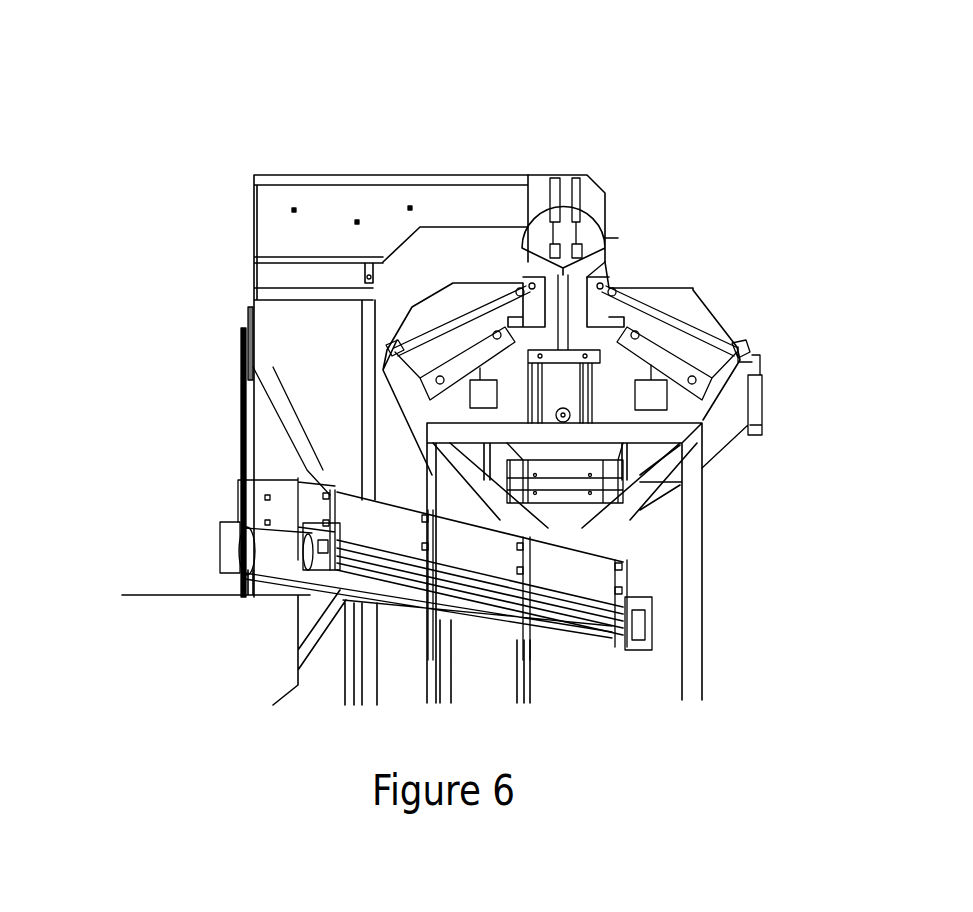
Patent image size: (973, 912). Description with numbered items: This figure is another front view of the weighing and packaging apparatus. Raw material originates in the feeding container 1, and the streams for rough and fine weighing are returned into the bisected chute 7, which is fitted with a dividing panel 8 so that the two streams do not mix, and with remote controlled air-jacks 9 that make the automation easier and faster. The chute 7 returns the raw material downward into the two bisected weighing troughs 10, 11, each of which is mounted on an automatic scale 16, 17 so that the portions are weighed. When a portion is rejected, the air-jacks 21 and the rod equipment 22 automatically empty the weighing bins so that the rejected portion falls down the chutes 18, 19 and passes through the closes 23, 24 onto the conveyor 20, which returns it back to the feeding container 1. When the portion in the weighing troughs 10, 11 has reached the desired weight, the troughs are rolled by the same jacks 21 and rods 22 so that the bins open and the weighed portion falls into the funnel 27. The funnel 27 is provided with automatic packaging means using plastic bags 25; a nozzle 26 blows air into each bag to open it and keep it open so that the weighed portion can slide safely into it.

The feeding container 1 is at (215, 645).
The chute 7 is at (590, 190).
The dividing panel 8 is at (576, 238).
The remote controlled air-jacks 9 is at (558, 178).
The weighing trough 10 is at (693, 290).
The weighing trough 11 is at (434, 320).
The automatic scale 16 is at (752, 355).
The automatic scale 17 is at (480, 395).
The chute 18 is at (722, 430).
The chute 19 is at (410, 437).
The conveyor 20 is at (568, 568).
The air-jacks 21 is at (664, 357).
The rod equipment 22 is at (617, 283).
The close 23 is at (742, 352).
The close 24 is at (390, 347).
The plastic bags 25 is at (686, 483).
The nozzle 26 is at (558, 416).
The funnel 27 is at (560, 382).